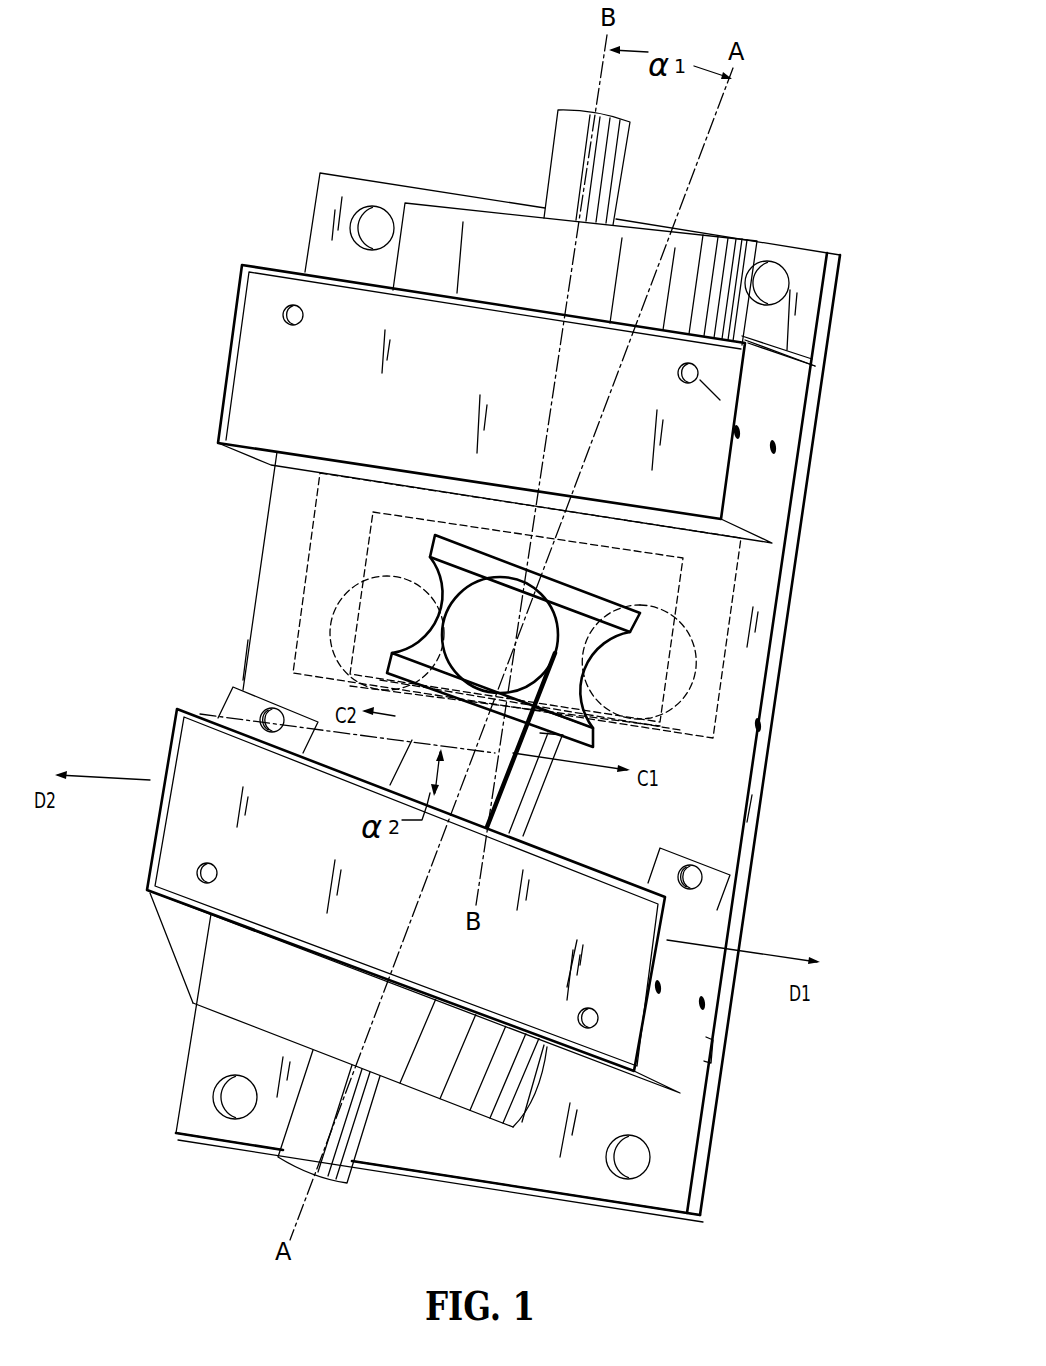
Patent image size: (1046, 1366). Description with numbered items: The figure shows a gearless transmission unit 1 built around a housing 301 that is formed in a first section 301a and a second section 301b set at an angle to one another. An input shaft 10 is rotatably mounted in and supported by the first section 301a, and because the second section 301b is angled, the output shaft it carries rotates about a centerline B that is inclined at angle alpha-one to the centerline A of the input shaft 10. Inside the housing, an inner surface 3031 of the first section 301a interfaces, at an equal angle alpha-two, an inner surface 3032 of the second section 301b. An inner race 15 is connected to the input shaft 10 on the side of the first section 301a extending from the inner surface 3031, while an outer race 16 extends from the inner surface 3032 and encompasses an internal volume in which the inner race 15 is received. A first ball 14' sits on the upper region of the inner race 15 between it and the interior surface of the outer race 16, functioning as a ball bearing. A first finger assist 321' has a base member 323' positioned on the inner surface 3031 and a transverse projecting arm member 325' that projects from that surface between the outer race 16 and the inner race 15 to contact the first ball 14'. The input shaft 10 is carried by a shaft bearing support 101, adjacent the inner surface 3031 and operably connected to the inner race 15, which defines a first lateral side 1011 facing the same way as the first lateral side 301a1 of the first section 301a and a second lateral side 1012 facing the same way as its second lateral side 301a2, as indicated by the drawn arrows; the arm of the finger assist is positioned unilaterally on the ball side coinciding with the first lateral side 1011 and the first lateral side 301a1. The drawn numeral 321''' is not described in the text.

The transmission unit 1 is at (128, 608).
The input shaft 10 is at (310, 1120).
The first ball 14' is at (577, 647).
The inner race 15 is at (582, 653).
The outer race 16 is at (725, 596).
The shaft bearing support 101 is at (420, 695).
The first lateral side 1011 is at (600, 787).
The second lateral side 1012 is at (433, 718).
The housing 301 is at (737, 398).
The first section 301a is at (728, 1012).
The first lateral side 301a1 is at (746, 849).
The second lateral side 301a2 is at (233, 662).
The second section 301b is at (338, 400).
The inner surface 3031 is at (666, 888).
The inner surface 3032 is at (714, 530).
The first finger assist 321' is at (600, 723).
The arm 321''' is at (700, 759).
The base member 323' is at (525, 790).
The projecting arm member 325' is at (677, 740).